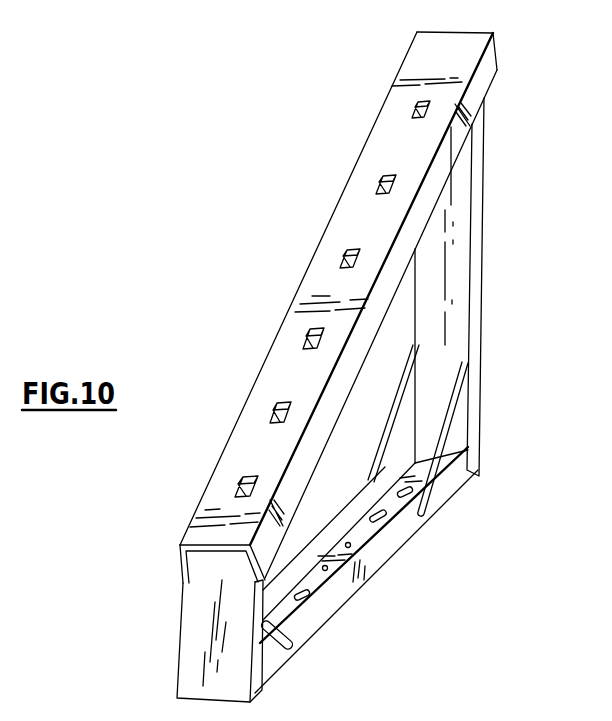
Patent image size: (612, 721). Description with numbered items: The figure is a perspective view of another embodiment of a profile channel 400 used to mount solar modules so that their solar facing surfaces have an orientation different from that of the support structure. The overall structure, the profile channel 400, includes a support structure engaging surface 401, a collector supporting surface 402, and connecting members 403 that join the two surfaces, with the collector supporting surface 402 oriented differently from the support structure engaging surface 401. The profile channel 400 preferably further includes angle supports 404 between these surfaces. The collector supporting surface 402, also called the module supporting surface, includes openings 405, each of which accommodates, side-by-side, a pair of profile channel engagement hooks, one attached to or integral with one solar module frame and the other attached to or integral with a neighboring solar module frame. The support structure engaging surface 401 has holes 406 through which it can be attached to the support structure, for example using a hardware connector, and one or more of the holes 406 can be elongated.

The profile channel 400 is at (232, 248).
The support structure engaging surface 401 is at (403, 532).
The collector supporting surface 402 is at (450, 64).
The connecting members 403 is at (458, 303).
The angle supports 404 is at (422, 400).
The openings 405 is at (410, 116).
The holes 406 is at (398, 492).